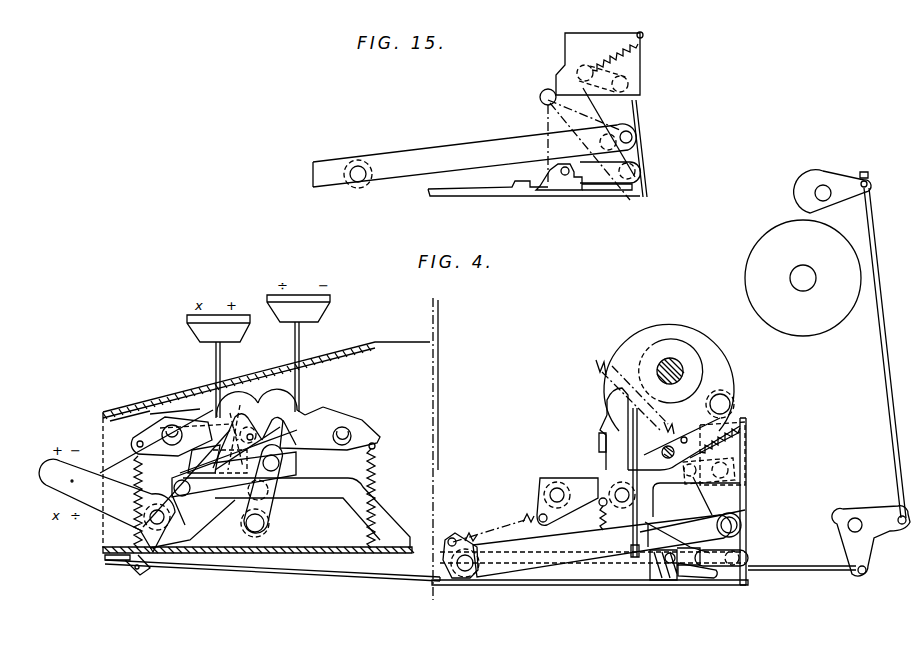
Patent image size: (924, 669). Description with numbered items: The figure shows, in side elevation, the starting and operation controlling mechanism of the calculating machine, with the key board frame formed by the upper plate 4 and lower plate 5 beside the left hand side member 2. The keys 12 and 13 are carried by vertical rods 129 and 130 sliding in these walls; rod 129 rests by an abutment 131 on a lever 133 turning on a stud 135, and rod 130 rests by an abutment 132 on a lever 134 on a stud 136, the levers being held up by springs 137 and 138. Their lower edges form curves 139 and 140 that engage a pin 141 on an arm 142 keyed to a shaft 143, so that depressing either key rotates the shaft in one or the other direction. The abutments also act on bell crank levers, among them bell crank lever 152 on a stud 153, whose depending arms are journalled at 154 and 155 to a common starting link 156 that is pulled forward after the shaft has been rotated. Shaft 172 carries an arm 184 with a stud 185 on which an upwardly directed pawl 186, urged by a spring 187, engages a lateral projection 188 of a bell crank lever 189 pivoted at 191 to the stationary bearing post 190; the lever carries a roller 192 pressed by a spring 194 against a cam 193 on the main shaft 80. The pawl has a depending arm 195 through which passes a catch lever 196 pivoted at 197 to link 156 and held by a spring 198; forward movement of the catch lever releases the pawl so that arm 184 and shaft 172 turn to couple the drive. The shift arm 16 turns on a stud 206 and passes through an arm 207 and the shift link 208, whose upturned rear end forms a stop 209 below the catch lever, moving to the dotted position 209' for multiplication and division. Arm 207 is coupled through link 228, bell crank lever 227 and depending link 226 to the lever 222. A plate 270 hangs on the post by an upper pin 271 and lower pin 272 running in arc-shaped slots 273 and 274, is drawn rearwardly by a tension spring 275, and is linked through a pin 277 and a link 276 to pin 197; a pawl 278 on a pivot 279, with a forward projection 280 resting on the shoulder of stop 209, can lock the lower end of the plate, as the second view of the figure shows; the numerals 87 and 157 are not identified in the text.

In FIG. 4, the left hand side member 2 is at (384, 349).
In FIG. 4, the upper plate 4 is at (118, 410).
In FIG. 4, the lower plate 5 is at (238, 568).
In FIG. 4, the key 12 is at (187, 322).
In FIG. 4, the key 13 is at (330, 302).
In FIG. 4, the shift arm 16 is at (92, 512).
In FIG. 4, the cam 87 is at (705, 337).
In FIG. 4, the main shaft 80 is at (683, 367).
In FIG. 4, the vertical rod 129 is at (216, 366).
In FIG. 4, the vertical rod 130 is at (295, 345).
In FIG. 4, the abutment 131 is at (216, 406).
In FIG. 4, the abutment 132 is at (298, 415).
In FIG. 4, the lever 133 is at (182, 408).
In FIG. 4, the lever 134 is at (327, 421).
In FIG. 4, the stud 135 is at (157, 432).
In FIG. 4, the stud 136 is at (352, 432).
In FIG. 4, the spring 137 is at (124, 502).
In FIG. 4, the spring 138 is at (375, 474).
In FIG. 4, the curve 139 is at (296, 454).
In FIG. 4, the curve 140 is at (217, 459).
In FIG. 4, the pin 141 is at (205, 500).
In FIG. 4, the arm 142 is at (282, 506).
In FIG. 4, the shaft 143 is at (265, 523).
In FIG. 4, the bell crank lever 152 is at (279, 410).
In FIG. 4, the stud 153 is at (251, 408).
In FIG. 4, the journal 154 is at (206, 508).
In FIG. 4, the journal 155 is at (300, 476).
In FIG. 4, the link 156 is at (383, 517).
In FIG. 4, the link 157 is at (170, 472).
In FIG. 4, the shaft 172 is at (545, 478).
In FIG. 4, the arm 184 is at (590, 480).
In FIG. 4, the stud 185 is at (653, 487).
In FIG. 4, the pawl 186 is at (604, 424).
In FIG. 4, the spring 187 is at (600, 513).
In FIG. 4, the lateral projection 188 is at (599, 440).
In FIG. 4, the bell crank lever 189 is at (748, 448).
In FIG. 15, the stationary portion of the frame 190 is at (597, 40).
In FIG. 4, the stationary portion of the frame 190 is at (748, 477).
In FIG. 4, the pivot 191 is at (662, 452).
In FIG. 4, the roller 192 is at (733, 408).
In FIG. 4, the cam 193 is at (716, 378).
In FIG. 4, the spring 194 is at (596, 368).
In FIG. 4, the arm 195 is at (632, 545).
In FIG. 4, the catch lever 196 is at (665, 532).
In FIG. 4, the pivot 197 is at (465, 578).
In FIG. 4, the spring 198 is at (508, 520).
In FIG. 4, the stud 206 is at (185, 556).
In FIG. 4, the arm 207 is at (110, 562).
In FIG. 15, the link 208 is at (481, 193).
In FIG. 4, the link 208 is at (518, 585).
In FIG. 15, the stop 209 is at (607, 202).
In FIG. 4, the stop 209 is at (676, 576).
In FIG. 4, the stop position 209' is at (692, 521).
In FIG. 4, the lever 222 is at (845, 172).
In FIG. 4, the depending link 226 is at (882, 363).
In FIG. 4, the bell crank lever 227 is at (848, 547).
In FIG. 4, the link 228 is at (780, 574).
In FIG. 15, the plate 270 is at (633, 112).
In FIG. 4, the plate 270 is at (748, 497).
In FIG. 15, the upper pin 271 is at (640, 86).
In FIG. 4, the upper pin 271 is at (748, 463).
In FIG. 15, the lower pin 272 is at (645, 170).
In FIG. 4, the lower pin 272 is at (748, 548).
In FIG. 4, the arc-shaped slot 273 is at (740, 494).
In FIG. 4, the arc-shaped slot 274 is at (748, 532).
In FIG. 15, the tension spring 275 is at (640, 55).
In FIG. 4, the tension spring 275 is at (748, 434).
In FIG. 15, the link 276 is at (497, 147).
In FIG. 4, the link 276 is at (580, 560).
In FIG. 4, the pin 277 is at (748, 516).
In FIG. 15, the pawl 278 is at (612, 178).
In FIG. 4, the pawl 278 is at (718, 577).
In FIG. 4, the pivot 279 is at (676, 565).
In FIG. 15, the projection 280 is at (553, 185).
In FIG. 4, the projection 280 is at (652, 570).